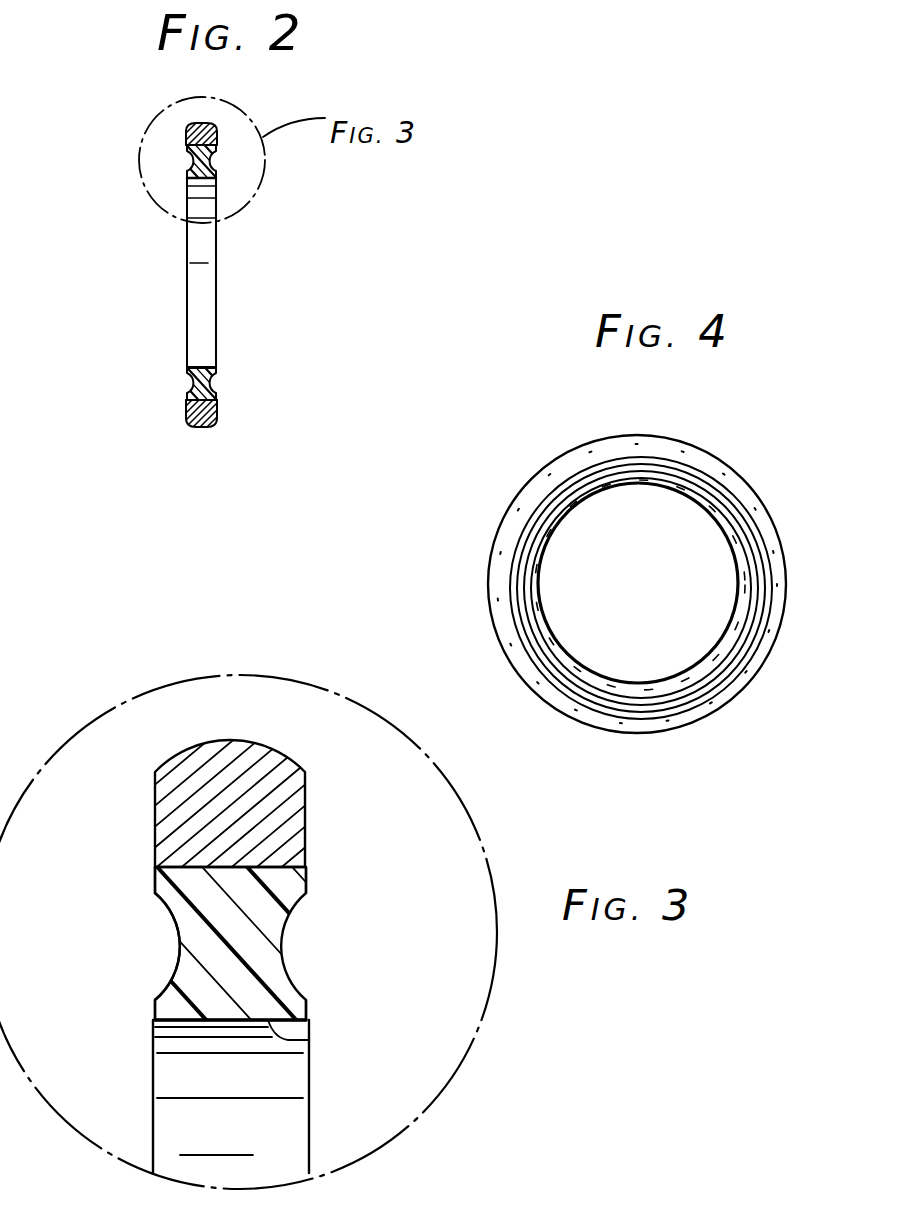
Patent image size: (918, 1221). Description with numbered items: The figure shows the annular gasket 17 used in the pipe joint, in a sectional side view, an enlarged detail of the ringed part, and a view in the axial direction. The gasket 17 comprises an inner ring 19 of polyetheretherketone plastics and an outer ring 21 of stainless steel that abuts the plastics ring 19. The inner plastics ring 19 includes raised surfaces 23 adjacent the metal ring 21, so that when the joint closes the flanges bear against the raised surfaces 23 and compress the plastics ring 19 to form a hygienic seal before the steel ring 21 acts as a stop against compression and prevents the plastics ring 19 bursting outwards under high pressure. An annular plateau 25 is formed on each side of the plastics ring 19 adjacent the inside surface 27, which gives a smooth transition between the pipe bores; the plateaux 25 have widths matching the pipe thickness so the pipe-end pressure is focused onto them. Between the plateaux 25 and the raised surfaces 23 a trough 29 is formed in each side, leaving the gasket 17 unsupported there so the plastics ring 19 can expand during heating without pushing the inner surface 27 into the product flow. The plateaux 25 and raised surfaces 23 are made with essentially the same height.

In FIG. 2, the gasket 17 is at (246, 269).
In FIG. 4, the gasket 17 is at (748, 378).
In FIG. 2, the inner ring 19 is at (187, 387).
In FIG. 3, the inner ring 19 is at (260, 946).
In FIG. 2, the outer ring 21 is at (222, 130).
In FIG. 4, the outer ring 21 is at (522, 497).
In FIG. 3, the outer ring 21 is at (303, 774).
In FIG. 4, the raised surfaces 23 is at (703, 686).
In FIG. 3, the raised surfaces 23 is at (155, 887).
In FIG. 4, the annular plateau 25 is at (612, 680).
In FIG. 3, the annular plateau 25 is at (307, 1003).
In FIG. 3, the inside surface 27 is at (312, 1040).
In FIG. 4, the trough 29 is at (718, 502).
In FIG. 3, the trough 29 is at (177, 938).